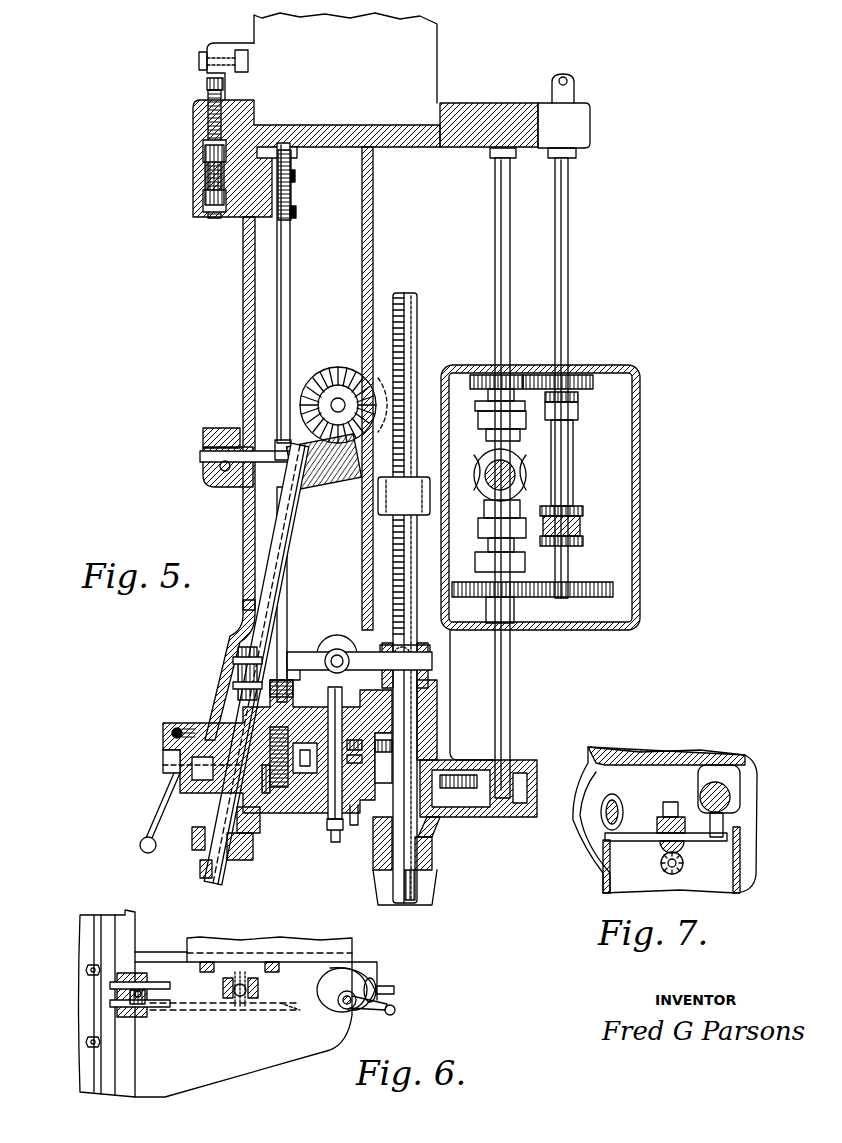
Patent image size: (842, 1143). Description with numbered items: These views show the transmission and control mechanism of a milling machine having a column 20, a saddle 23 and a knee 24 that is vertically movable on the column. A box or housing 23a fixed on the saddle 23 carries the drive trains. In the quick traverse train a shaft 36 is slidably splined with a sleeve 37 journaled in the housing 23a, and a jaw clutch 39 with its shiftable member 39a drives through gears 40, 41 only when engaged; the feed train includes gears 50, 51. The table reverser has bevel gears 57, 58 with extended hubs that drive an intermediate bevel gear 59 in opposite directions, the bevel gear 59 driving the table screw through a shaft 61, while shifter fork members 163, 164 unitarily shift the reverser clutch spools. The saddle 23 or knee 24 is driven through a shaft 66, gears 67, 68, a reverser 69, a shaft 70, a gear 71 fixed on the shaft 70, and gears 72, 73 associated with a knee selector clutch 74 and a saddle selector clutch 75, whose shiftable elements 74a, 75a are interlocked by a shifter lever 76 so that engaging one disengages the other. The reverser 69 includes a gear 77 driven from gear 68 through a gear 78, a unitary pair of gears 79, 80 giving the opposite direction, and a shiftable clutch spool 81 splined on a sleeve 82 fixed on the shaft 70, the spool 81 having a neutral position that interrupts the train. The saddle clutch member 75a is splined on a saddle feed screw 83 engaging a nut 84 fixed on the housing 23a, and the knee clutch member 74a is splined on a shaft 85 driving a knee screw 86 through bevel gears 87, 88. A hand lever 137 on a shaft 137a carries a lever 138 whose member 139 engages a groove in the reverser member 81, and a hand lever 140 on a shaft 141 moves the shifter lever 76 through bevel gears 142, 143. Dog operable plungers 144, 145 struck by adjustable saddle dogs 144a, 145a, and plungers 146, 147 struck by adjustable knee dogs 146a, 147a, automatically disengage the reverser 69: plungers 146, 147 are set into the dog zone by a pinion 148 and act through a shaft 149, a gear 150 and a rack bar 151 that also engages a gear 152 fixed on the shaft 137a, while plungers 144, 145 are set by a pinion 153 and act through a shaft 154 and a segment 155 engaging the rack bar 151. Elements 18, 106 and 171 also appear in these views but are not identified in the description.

In FIG. 5, the support lug 18 is at (440, 805).
In FIG. 6, the column 20 is at (126, 918).
In FIG. 6, the saddle 23 is at (305, 940).
In FIG. 5, the box or housing 23a is at (622, 631).
In FIG. 7, the knee 24 is at (603, 866).
In FIG. 6, the knee 24 is at (318, 1040).
In FIG. 5, the shaft 36 is at (565, 300).
In FIG. 5, the sleeve 37 is at (568, 456).
In FIG. 5, the jaw clutch 39 is at (578, 397).
In FIG. 5, the shiftable member 39a is at (578, 410).
In FIG. 5, the gear 40 is at (548, 375).
In FIG. 5, the gear 41 is at (482, 375).
In FIG. 5, the gear 50 is at (614, 590).
In FIG. 5, the gear 51 is at (537, 600).
In FIG. 5, the bevel gear 57 is at (525, 495).
In FIG. 5, the bevel gear 58 is at (530, 455).
In FIG. 5, the intermediate bevel gear 59 is at (527, 480).
In FIG. 5, the shaft 61 is at (515, 477).
In FIG. 5, the shaft 66 is at (505, 300).
In FIG. 5, the gear 67 is at (538, 782).
In FIG. 5, the gear 68 is at (458, 773).
In FIG. 5, the reverser 69 is at (258, 846).
In FIG. 5, the shaft 70 is at (312, 840).
In FIG. 5, the gear 71 is at (277, 745).
In FIG. 5, the gear 72 is at (225, 705).
In FIG. 5, the gear 73 is at (438, 722).
In FIG. 5, the knee selector clutch 74 is at (212, 676).
In FIG. 5, the shiftable element 74a is at (238, 658).
In FIG. 7, the shiftable element 74a is at (616, 798).
In FIG. 5, the saddle selector clutch 75 is at (444, 680).
In FIG. 5, the shiftable element 75a is at (425, 648).
In FIG. 7, the shiftable element 75a is at (668, 802).
In FIG. 5, the shifter lever 76 is at (300, 660).
In FIG. 7, the shifter lever 76 is at (632, 833).
In FIG. 5, the gear 77 is at (303, 806).
In FIG. 5, the gear 78 is at (405, 887).
In FIG. 5, the gear 79 is at (342, 731).
In FIG. 5, the gear 80 is at (394, 747).
In FIG. 5, the shiftable clutch spool 81 is at (365, 760).
In FIG. 5, the sleeve 82 is at (365, 743).
In FIG. 5, the saddle feed screw 83 is at (436, 632).
In FIG. 7, the saddle feed screw 83 is at (728, 790).
In FIG. 5, the nut 84 is at (425, 516).
In FIG. 5, the shaft 85 is at (283, 616).
In FIG. 5, the knee screw 86 is at (338, 398).
In FIG. 5, the bevel gear 87 is at (362, 468).
In FIG. 5, the bevel gear 88 is at (312, 380).
In FIG. 5, the gear 106 is at (583, 511).
In FIG. 5, the hand lever 137 is at (147, 830).
In FIG. 6, the hand lever 137 is at (392, 1012).
In FIG. 5, the shaft 137a is at (190, 766).
In FIG. 5, the lever 138 is at (295, 757).
In FIG. 5, the member 139 is at (318, 776).
In FIG. 5, the hand lever 140 is at (352, 845).
In FIG. 5, the shaft 141 is at (332, 830).
In FIG. 7, the shaft 141 is at (665, 872).
In FIG. 7, the bevel gear 142 is at (668, 864).
In FIG. 7, the bevel gear 143 is at (665, 848).
In FIG. 5, the dog operable plunger 144 is at (222, 428).
In FIG. 6, the dog operable plunger 144 is at (222, 980).
In FIG. 6, the adjustable dog 144a is at (207, 962).
In FIG. 5, the dog operable plunger 145 is at (213, 488).
In FIG. 6, the dog operable plunger 145 is at (258, 980).
In FIG. 6, the adjustable dog 145a is at (272, 962).
In FIG. 6, the plunger 146 is at (110, 1004).
In FIG. 6, the adjustable dog 146a is at (88, 1043).
In FIG. 5, the plunger 147 is at (208, 148).
In FIG. 6, the plunger 147 is at (110, 985).
In FIG. 5, the adjustable dog 147a is at (207, 84).
In FIG. 6, the adjustable dog 147a is at (88, 970).
In FIG. 5, the pinion 148 is at (208, 198).
In FIG. 6, the pinion 148 is at (146, 992).
In FIG. 5, the shaft 149 is at (295, 176).
In FIG. 6, the shaft 149 is at (140, 992).
In FIG. 5, the gear 150 is at (296, 200).
In FIG. 5, the rack bar 151 is at (286, 290).
In FIG. 6, the rack bar 151 is at (286, 1004).
In FIG. 5, the gear 152 is at (255, 864).
In FIG. 6, the gear 152 is at (386, 997).
In FIG. 5, the pinion 153 is at (220, 468).
In FIG. 6, the pinion 153 is at (240, 998).
In FIG. 5, the shaft 154 is at (205, 456).
In FIG. 6, the shaft 154 is at (225, 996).
In FIG. 5, the segment 155 is at (278, 446).
In FIG. 5, the shifter fork member 163 is at (480, 552).
In FIG. 5, the shifter fork member 164 is at (480, 412).
In FIG. 5, the gear 171 is at (583, 541).